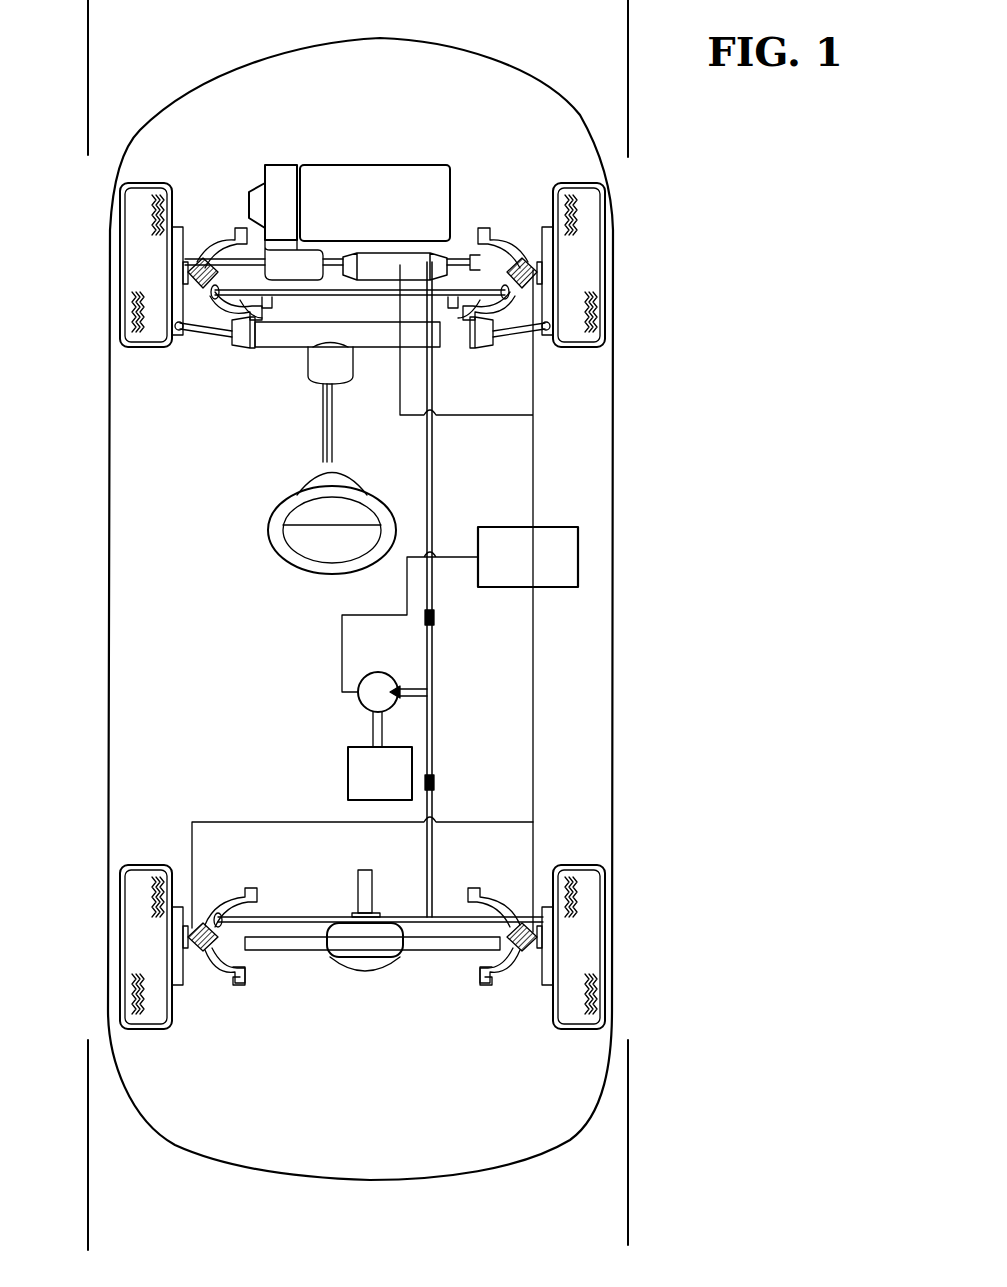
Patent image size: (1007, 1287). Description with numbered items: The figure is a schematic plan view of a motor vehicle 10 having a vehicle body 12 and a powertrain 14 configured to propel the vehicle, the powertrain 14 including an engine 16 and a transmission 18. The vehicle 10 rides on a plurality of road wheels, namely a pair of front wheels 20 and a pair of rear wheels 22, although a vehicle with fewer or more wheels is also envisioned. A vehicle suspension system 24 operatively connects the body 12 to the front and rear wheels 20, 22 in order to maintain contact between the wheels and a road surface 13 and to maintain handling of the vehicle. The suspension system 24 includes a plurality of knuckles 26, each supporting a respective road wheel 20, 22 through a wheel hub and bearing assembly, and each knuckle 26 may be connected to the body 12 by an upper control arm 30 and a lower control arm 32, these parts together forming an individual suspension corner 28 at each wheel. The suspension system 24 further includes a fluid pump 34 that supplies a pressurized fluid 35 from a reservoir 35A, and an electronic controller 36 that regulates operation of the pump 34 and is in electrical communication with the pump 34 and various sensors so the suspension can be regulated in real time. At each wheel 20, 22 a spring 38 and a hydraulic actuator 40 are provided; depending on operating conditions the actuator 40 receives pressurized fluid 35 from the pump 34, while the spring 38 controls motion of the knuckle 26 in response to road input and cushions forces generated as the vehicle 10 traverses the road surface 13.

The motor vehicle 10 is at (637, 470).
The vehicle body 12 is at (612, 612).
The road surface 13 is at (141, 25).
The powertrain 14 is at (338, 165).
The engine 16 is at (373, 196).
The transmission 18 is at (280, 178).
The front wheels 20 is at (123, 245).
The rear wheels 22 is at (124, 993).
The vehicle suspension system 24 is at (190, 343).
The knuckle 26 is at (178, 325).
The suspension corner 28 is at (192, 262).
The upper control arm 30 is at (226, 337).
The lower control arm 32 is at (210, 235).
The fluid pump 34 is at (376, 672).
The pressurized fluid 35 is at (434, 622).
The reservoir 35A is at (361, 786).
The electronic controller 36 is at (516, 569).
The spring 38 is at (197, 273).
The actuator 40 is at (190, 240).